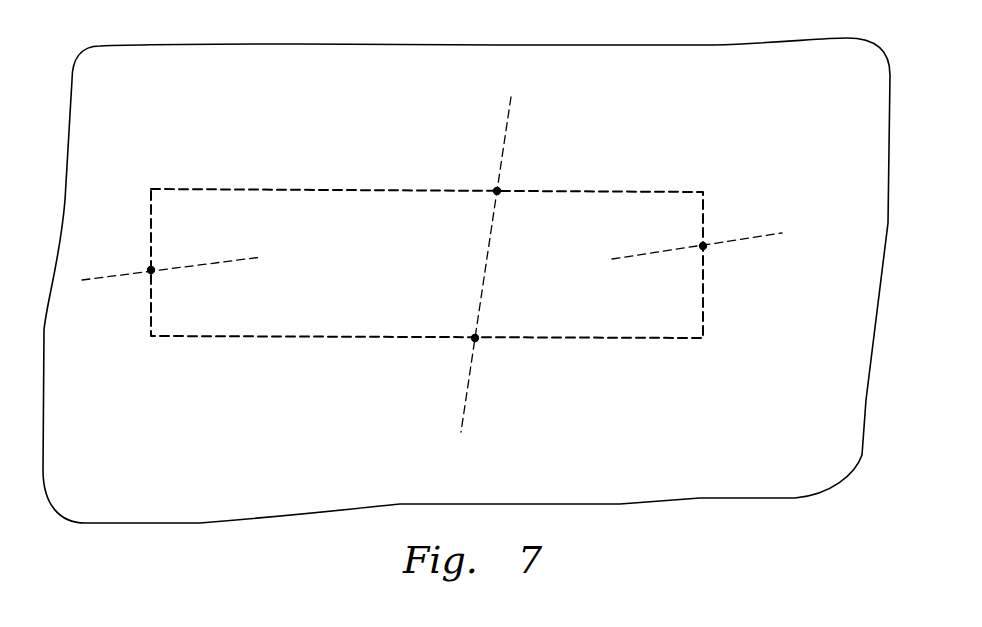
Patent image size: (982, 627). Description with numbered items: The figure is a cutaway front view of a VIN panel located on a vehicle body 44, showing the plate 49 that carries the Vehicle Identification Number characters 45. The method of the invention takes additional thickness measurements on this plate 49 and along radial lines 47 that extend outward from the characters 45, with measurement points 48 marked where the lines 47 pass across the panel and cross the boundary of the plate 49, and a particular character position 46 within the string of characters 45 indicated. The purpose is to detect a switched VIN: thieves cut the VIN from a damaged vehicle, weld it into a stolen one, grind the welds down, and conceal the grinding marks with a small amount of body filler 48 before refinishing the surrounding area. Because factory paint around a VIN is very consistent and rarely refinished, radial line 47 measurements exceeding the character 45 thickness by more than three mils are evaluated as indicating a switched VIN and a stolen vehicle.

The vehicle identification plate 44 is at (795, 498).
The VIN characters 45 is at (267, 276).
The character position of identification number 46 is at (492, 262).
The radial lines 47 is at (122, 275).
The body filler 48 is at (151, 270).
The plate 49 is at (192, 189).